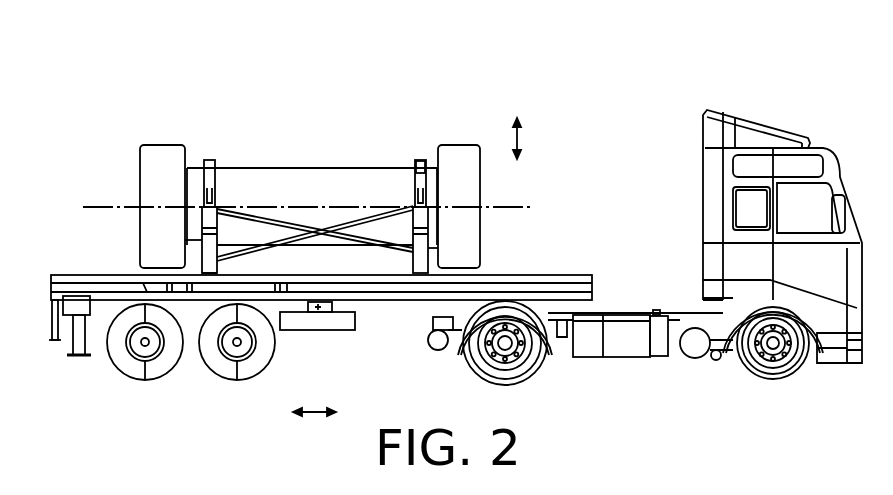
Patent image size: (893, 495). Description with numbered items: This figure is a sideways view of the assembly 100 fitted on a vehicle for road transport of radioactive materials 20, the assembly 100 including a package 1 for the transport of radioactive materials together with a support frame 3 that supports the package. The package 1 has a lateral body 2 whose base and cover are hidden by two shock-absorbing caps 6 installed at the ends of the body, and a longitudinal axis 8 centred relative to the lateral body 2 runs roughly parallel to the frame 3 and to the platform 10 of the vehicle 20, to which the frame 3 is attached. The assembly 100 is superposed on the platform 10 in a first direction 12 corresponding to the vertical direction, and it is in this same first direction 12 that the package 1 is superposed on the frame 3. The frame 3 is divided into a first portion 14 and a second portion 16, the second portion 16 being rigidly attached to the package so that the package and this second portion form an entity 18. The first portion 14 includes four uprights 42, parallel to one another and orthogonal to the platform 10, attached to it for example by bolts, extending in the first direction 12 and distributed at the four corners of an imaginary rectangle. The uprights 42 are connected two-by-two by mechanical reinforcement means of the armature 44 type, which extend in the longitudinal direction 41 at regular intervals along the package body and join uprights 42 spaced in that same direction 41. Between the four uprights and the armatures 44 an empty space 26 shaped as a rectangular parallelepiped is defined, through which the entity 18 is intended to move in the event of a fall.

The assembly 100 is at (212, 88).
The package 1 is at (190, 165).
The lateral body 2 is at (293, 167).
The support frame 3 is at (330, 250).
The shock-absorbing caps 6 is at (162, 157).
The longitudinal axis 8 is at (527, 207).
The platform 10 is at (138, 272).
The first direction 12 is at (522, 132).
The first portion 14 is at (210, 268).
The second portion 16 is at (213, 158).
The entity 18 is at (427, 143).
The vehicle for road transport of radioactive materials 20 is at (82, 212).
The empty space 26 is at (272, 236).
The longitudinal direction 41 is at (314, 414).
The uprights 42 is at (188, 240).
The armature 44 is at (385, 236).